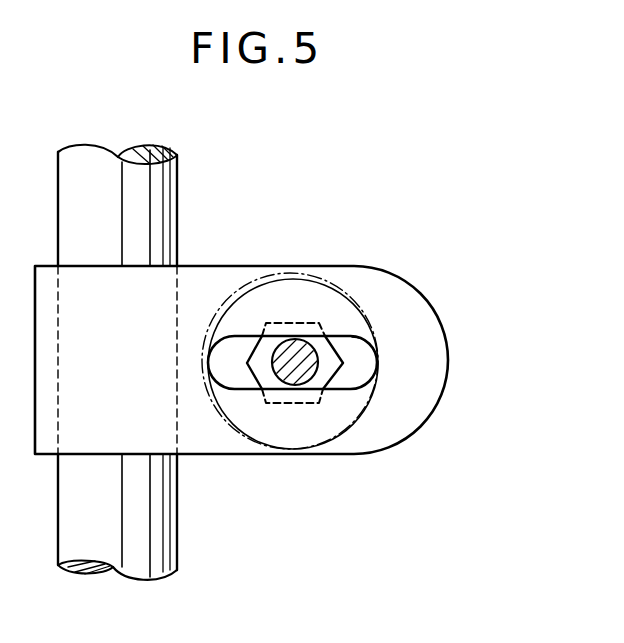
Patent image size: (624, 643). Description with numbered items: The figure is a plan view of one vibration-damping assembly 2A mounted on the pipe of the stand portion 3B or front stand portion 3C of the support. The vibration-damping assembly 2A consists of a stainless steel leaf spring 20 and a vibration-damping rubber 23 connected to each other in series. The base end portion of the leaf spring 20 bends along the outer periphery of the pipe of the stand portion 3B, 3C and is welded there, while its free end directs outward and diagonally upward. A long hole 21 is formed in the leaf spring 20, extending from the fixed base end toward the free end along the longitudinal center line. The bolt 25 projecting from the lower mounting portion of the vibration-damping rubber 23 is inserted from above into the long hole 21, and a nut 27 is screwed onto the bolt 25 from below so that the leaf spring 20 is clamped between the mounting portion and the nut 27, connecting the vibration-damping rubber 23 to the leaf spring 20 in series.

The vibration-damping assembly 2A is at (440, 273).
The stand portion 3B is at (198, 362).
The front stand portion 3C is at (155, 525).
The leaf spring 20 is at (215, 290).
The long hole 21 is at (380, 357).
The vibration-damping rubber 23 is at (343, 283).
The bolt 25 is at (288, 350).
The nut 27 is at (330, 375).